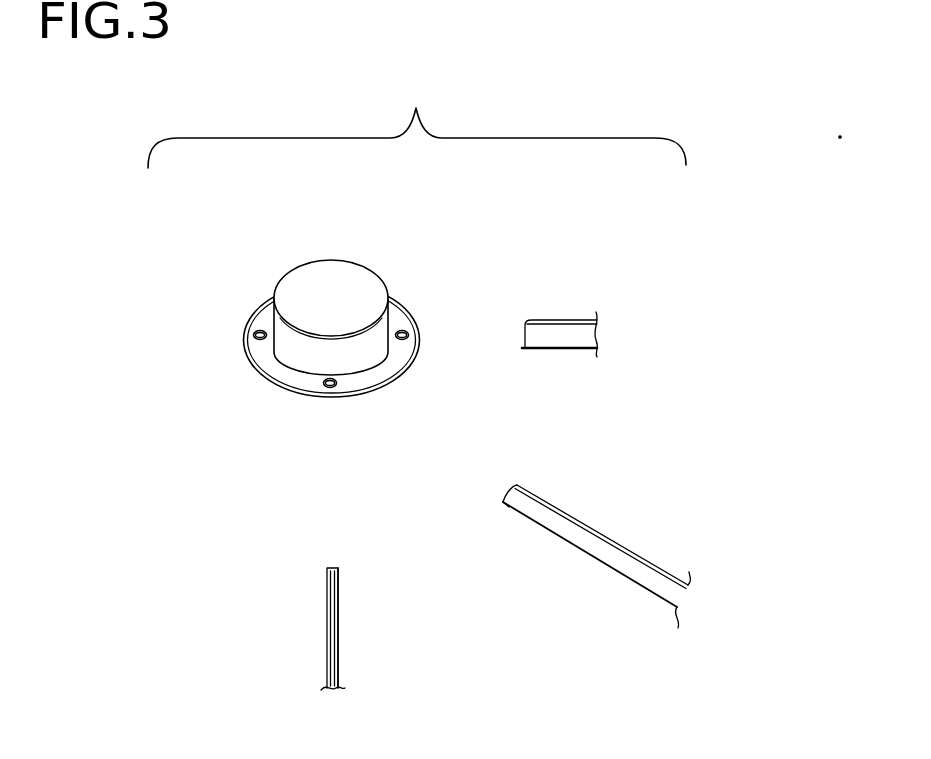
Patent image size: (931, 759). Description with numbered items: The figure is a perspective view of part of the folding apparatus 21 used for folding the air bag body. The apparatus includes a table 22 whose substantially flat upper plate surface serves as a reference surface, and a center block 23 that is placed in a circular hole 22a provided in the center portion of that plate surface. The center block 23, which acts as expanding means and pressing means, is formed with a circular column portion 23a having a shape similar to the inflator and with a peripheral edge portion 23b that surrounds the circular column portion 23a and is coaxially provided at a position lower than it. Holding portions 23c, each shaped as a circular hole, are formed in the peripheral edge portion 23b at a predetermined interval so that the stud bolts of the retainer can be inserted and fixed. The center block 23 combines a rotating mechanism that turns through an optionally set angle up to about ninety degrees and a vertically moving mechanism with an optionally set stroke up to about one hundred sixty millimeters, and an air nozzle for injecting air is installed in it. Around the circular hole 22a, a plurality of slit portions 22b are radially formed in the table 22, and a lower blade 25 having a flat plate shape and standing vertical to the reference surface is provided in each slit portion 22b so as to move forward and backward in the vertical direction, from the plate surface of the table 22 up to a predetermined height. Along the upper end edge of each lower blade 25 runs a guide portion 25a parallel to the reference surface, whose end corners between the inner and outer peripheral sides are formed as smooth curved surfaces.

The folding apparatus 21 is at (246, 283).
The table 22 is at (671, 501).
The circular hole 22a is at (415, 320).
The slit portions 22b is at (558, 349).
The center block 23 is at (360, 273).
The circular column portion 23a is at (300, 280).
The peripheral edge portion 23b is at (267, 362).
The holding portions 23c is at (255, 339).
The lower blade 25 is at (587, 335).
The guide portion 25a is at (600, 532).